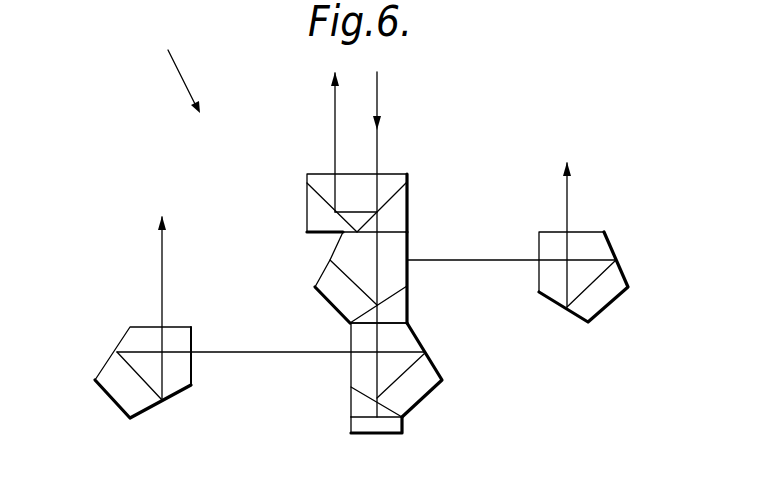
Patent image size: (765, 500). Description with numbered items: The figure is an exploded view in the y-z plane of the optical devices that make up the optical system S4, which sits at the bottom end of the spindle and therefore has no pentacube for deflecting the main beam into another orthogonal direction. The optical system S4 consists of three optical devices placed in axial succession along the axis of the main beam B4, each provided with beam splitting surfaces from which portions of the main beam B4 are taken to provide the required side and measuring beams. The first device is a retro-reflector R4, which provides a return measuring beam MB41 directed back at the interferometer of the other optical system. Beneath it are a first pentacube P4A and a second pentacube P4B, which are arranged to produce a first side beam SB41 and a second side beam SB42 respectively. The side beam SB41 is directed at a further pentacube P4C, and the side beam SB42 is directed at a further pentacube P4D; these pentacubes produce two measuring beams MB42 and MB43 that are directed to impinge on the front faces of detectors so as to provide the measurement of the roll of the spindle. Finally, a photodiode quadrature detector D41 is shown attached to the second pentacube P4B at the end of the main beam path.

The optical system S4 is at (189, 71).
The main beam B4 is at (378, 137).
The return measuring beam MB41 is at (334, 114).
The retro-reflector R4 is at (408, 195).
The first pentacube P4A is at (408, 273).
The first side beam SB41 is at (453, 258).
The pentacube P4C is at (628, 287).
The measuring beam MB42 is at (570, 198).
The second pentacube P4B is at (442, 380).
The photodiode quadrature detector D41 is at (403, 425).
The second side beam SB42 is at (252, 350).
The pentacube P4D is at (180, 397).
The measuring beam MB43 is at (162, 281).